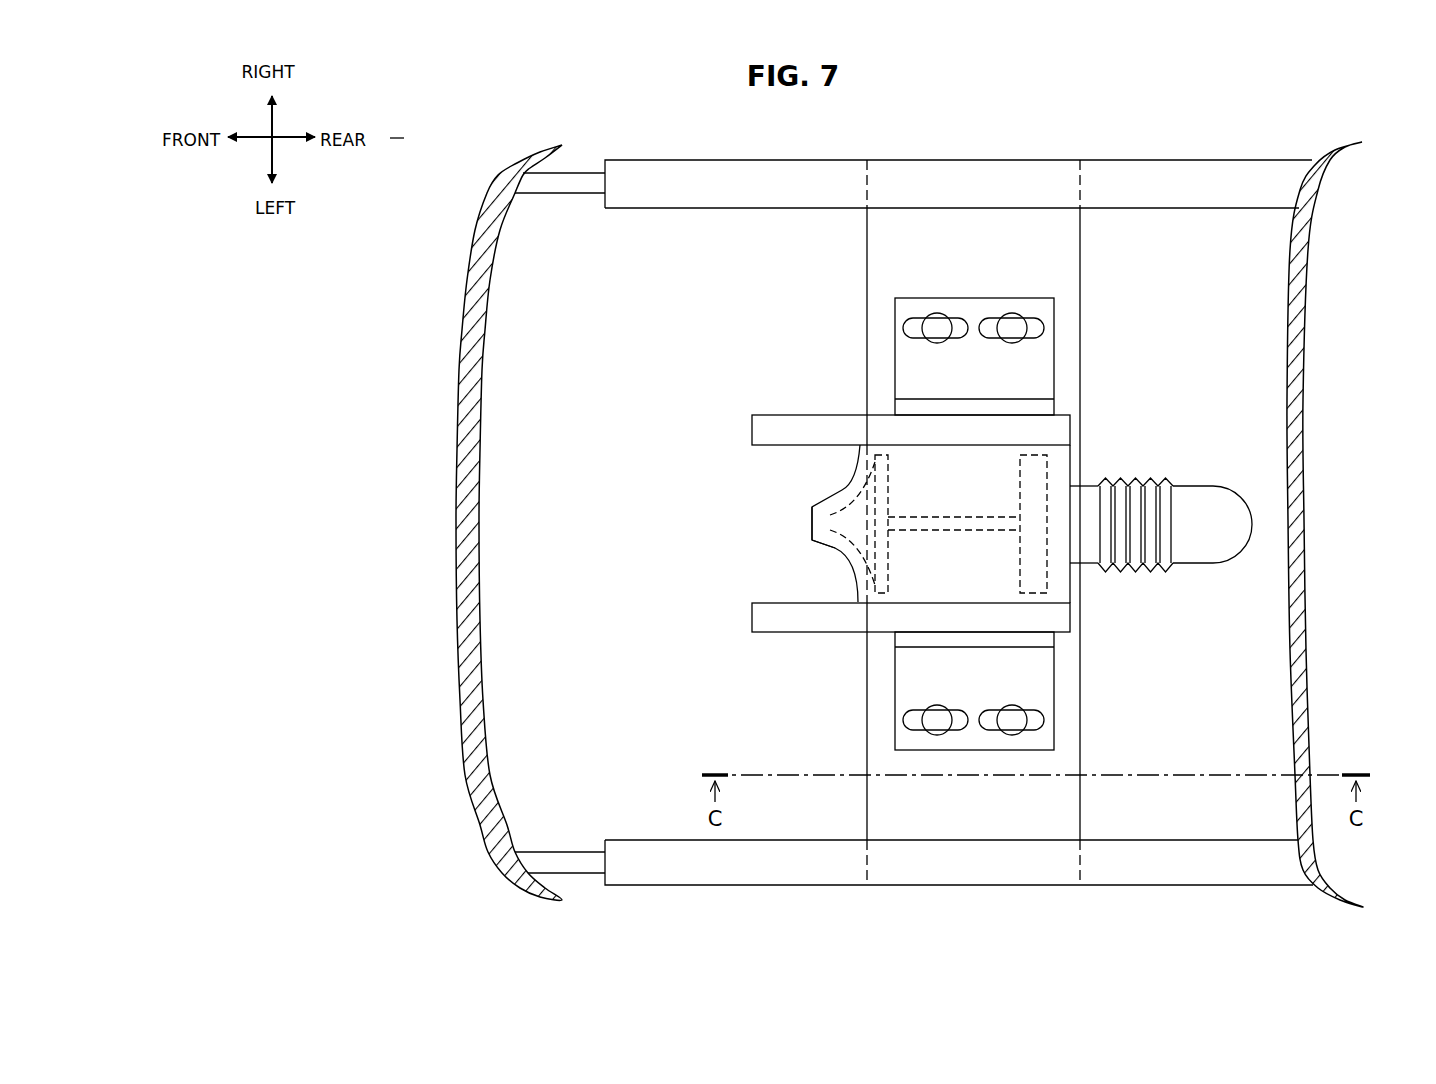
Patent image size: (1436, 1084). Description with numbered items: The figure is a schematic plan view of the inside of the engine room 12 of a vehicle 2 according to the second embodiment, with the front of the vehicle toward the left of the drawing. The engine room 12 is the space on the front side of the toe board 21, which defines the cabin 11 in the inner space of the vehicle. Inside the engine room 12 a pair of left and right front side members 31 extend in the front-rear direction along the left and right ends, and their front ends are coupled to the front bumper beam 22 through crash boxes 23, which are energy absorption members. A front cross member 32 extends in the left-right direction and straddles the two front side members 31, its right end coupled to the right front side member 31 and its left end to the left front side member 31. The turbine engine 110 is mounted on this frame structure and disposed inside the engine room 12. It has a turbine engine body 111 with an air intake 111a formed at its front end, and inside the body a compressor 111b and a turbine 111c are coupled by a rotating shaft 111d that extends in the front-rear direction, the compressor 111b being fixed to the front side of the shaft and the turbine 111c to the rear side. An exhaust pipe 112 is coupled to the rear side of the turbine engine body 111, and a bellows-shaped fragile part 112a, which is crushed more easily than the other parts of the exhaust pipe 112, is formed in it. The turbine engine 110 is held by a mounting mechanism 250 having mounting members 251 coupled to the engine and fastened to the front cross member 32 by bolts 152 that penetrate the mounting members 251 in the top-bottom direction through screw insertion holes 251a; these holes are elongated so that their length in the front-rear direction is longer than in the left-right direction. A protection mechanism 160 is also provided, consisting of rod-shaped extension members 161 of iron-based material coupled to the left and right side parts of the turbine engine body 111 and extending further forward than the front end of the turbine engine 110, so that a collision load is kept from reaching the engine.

The vehicle 2 is at (397, 127).
The cabin 11 is at (1362, 287).
The engine room 12 is at (753, 283).
The toe board 21 is at (1306, 466).
The front bumper beam 22 is at (458, 519).
The crash box 23 is at (583, 172).
The front side member 31 is at (703, 160).
The front cross member 32 is at (1080, 270).
The turbine engine 110 is at (923, 539).
The turbine engine body 111 is at (840, 490).
The air intake 111a is at (812, 522).
The compressor 111b is at (835, 548).
The turbine 111c is at (1047, 585).
The rotating shaft 111d is at (957, 532).
The exhaust pipe 112 is at (1161, 497).
The fragile part 112a is at (1128, 478).
The bolt 152 is at (932, 313).
The protection mechanism 160 is at (820, 521).
The extension member 161 is at (785, 415).
The mounting mechanism 250 is at (1045, 524).
The mounting member 251 is at (1058, 355).
The screw insertion hole 251a is at (910, 323).